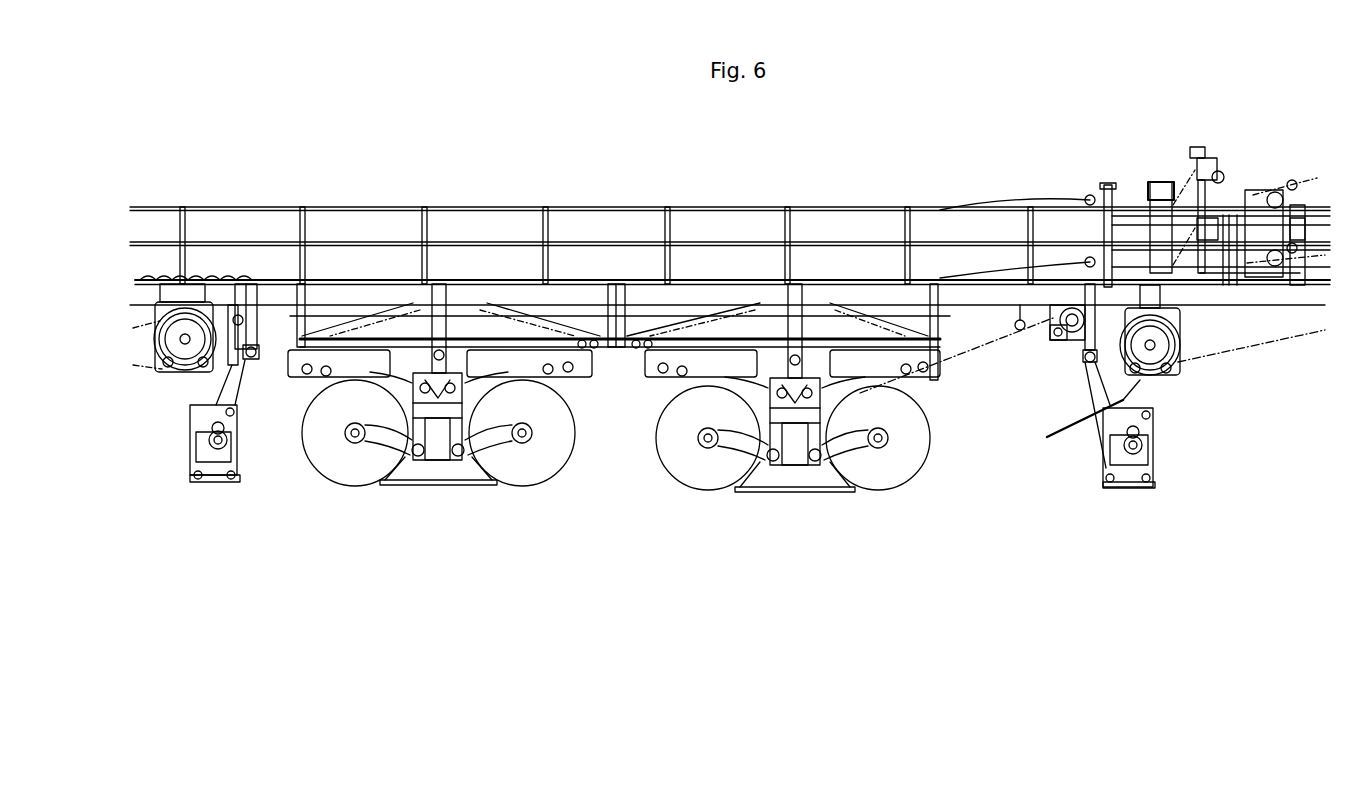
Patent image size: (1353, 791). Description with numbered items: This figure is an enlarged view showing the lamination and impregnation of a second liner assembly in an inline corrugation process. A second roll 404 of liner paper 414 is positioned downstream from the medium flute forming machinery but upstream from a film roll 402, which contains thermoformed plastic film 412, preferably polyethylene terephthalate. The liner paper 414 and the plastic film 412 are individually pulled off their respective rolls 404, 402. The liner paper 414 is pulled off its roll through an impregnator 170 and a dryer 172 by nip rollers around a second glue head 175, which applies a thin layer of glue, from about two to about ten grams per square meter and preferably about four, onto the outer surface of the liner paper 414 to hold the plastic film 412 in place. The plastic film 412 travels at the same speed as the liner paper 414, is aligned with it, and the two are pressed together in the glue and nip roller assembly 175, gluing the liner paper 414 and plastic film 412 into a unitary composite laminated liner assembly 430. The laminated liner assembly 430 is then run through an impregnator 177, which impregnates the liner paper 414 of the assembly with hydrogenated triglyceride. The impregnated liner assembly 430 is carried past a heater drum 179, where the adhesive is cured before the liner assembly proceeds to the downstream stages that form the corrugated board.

The impregnator 170 is at (219, 477).
The dryer 172 is at (207, 300).
The second glue head 175 is at (1073, 307).
The impregnator 177 is at (1127, 488).
The heater drum 179 is at (1180, 360).
The film roll 402 is at (708, 472).
The second roll 404 is at (352, 476).
The plastic film 412 is at (1008, 338).
The liner paper 414 is at (267, 352).
The laminated liner assembly 430 is at (1075, 415).